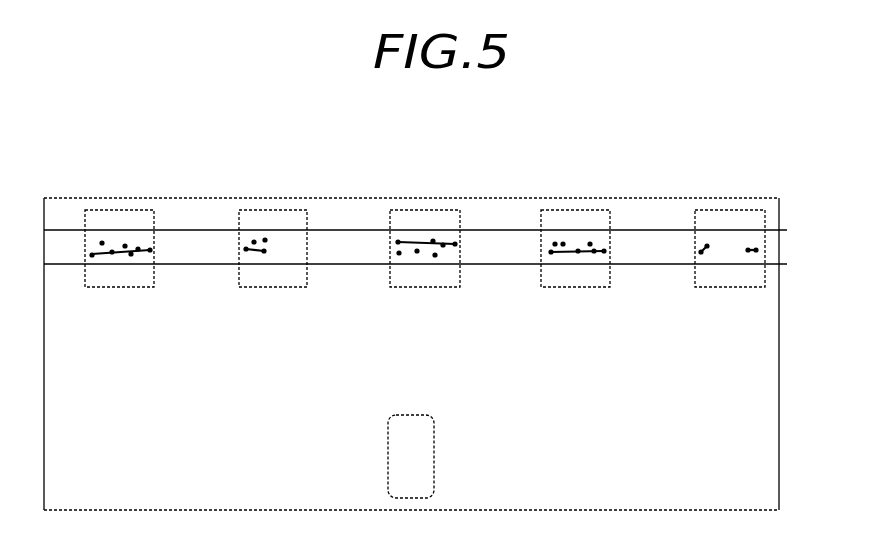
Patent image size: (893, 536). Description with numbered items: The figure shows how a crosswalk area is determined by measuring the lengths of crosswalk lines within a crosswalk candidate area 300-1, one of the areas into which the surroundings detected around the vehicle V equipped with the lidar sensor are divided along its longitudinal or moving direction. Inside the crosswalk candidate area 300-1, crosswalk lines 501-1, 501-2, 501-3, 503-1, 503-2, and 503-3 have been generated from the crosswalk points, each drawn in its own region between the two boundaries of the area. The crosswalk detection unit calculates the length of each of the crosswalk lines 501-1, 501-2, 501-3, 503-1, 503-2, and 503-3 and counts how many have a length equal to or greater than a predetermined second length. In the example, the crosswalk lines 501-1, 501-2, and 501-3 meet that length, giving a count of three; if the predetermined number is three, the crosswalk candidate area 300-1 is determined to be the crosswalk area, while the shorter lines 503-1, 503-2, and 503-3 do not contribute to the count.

The crosswalk candidate area 300-1 is at (776, 251).
The crosswalk line 501-1 is at (105, 254).
The crosswalk line 501-2 is at (425, 244).
The crosswalk line 501-3 is at (561, 253).
The crosswalk line 503-1 is at (256, 251).
The crosswalk line 503-2 is at (707, 248).
The crosswalk line 503-3 is at (749, 252).
The vehicle V is at (434, 450).